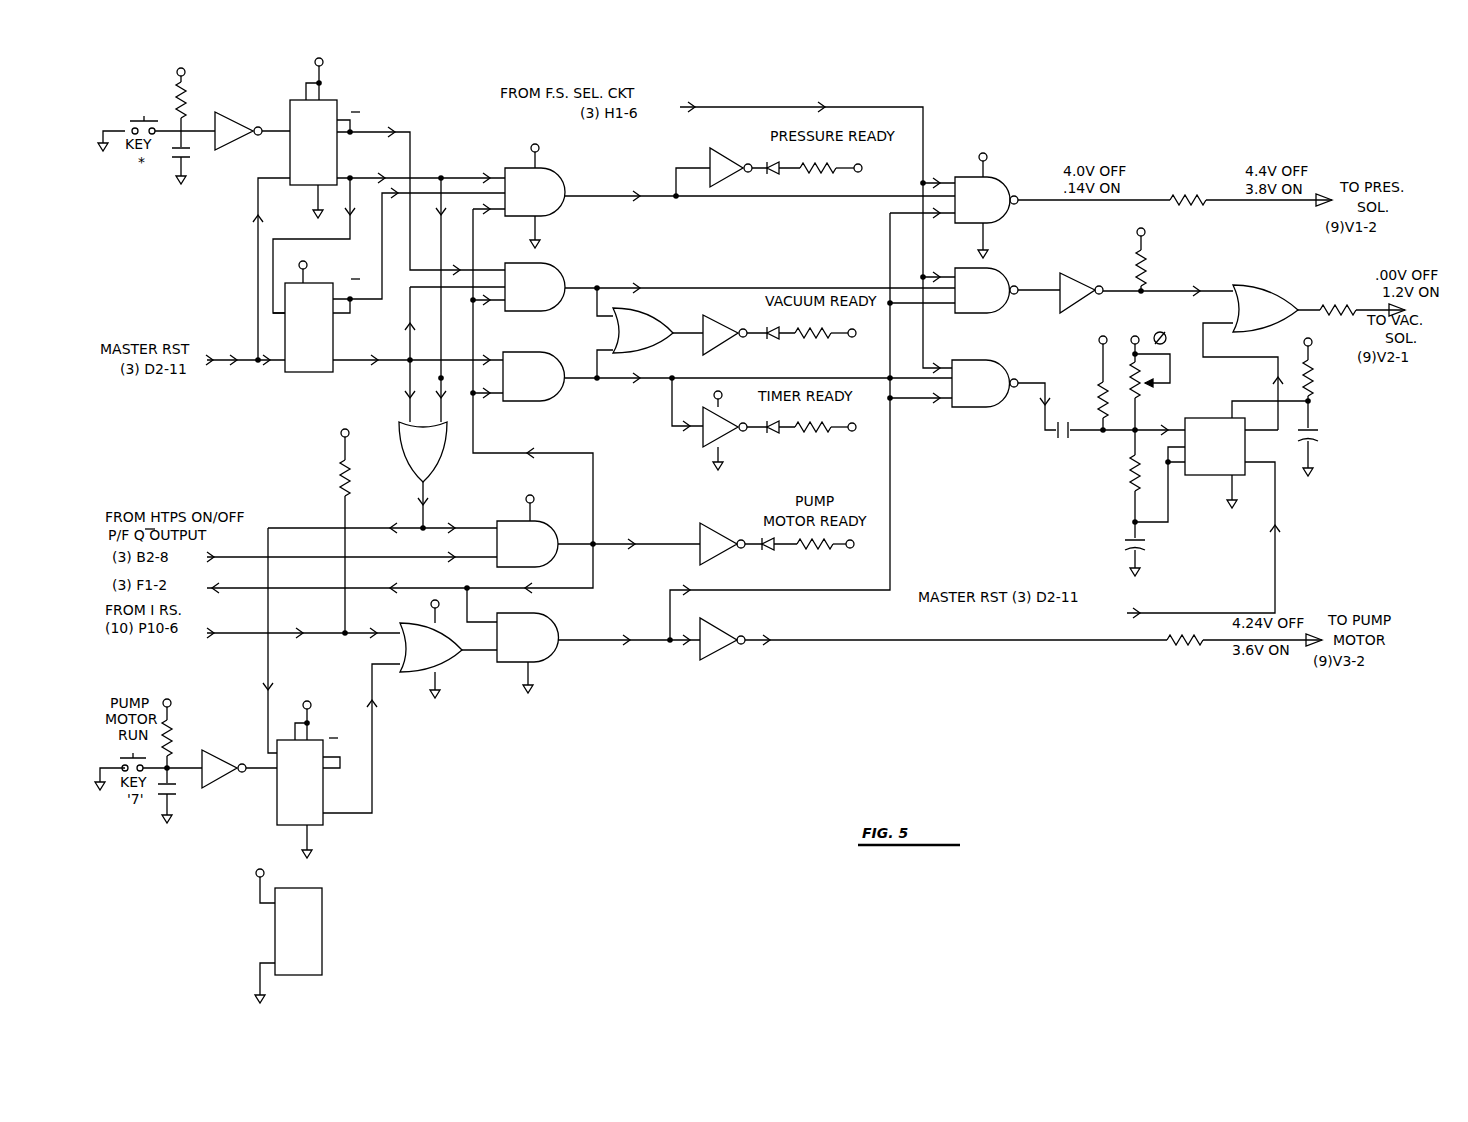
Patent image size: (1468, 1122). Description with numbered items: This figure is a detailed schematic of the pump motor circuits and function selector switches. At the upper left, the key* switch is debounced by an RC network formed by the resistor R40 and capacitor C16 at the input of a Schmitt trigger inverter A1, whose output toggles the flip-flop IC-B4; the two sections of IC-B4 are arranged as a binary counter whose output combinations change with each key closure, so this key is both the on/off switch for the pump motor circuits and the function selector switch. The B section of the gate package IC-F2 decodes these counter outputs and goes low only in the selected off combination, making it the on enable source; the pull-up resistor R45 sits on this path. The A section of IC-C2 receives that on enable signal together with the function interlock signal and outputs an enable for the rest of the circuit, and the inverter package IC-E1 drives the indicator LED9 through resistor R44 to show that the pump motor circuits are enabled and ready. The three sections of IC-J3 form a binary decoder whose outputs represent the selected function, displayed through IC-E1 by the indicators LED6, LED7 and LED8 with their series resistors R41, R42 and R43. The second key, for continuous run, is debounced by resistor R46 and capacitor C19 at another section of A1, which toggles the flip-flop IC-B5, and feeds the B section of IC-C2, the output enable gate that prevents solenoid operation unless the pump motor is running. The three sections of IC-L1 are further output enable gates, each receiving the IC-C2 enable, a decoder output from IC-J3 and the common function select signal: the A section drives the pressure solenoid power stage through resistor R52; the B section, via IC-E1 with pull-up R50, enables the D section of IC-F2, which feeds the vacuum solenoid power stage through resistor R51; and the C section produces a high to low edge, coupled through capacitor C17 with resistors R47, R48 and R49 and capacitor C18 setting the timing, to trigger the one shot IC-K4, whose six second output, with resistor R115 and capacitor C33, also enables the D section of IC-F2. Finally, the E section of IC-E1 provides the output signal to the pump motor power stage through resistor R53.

The 10K resistor R40 is at (198, 94).
The 2.2uf capacitor C16 is at (199, 157).
The inverter IC A1 is at (232, 456).
The IC- B4 is at (324, 209).
The IC- J3 is at (545, 267).
The IC- F2 is at (850, 479).
The IC- E1 is at (906, 393).
The LED 6 LED6 is at (776, 178).
The 150 ohm resistor R41 is at (841, 174).
The LED 7 LED7 is at (771, 342).
The 150 ohm resistor R42 is at (833, 347).
The LED 8 LED8 is at (771, 437).
The 150 ohm resistor R43 is at (833, 442).
The LED 9 LED9 is at (771, 557).
The 150 ohm resistor R44 is at (825, 562).
The IC- L1 is at (996, 274).
The 270 ohm resistor R52 is at (1190, 197).
The 5.1K resistor R50 is at (1156, 254).
The 270 ohm resistor R51 is at (1340, 308).
The .01uf capacitor C17 is at (1041, 444).
The 47K resistor R47 is at (1088, 377).
The 500K potentiometer R48 is at (1153, 377).
The 240K resistor R49 is at (1111, 476).
The 10uf capacitor C18 is at (1107, 548).
The IC- K4 is at (1215, 458).
The 1K resistor R115 is at (1325, 364).
The 33uf capacitor C33 is at (1332, 438).
The 5.1K resistor R45 is at (362, 525).
The IC- C2 is at (535, 582).
The 270 ohm resistor R53 is at (1183, 639).
The 10K resistor R46 is at (185, 728).
The 2.2uf capacitor C19 is at (185, 795).
The flip-flop IC B5 is at (305, 832).